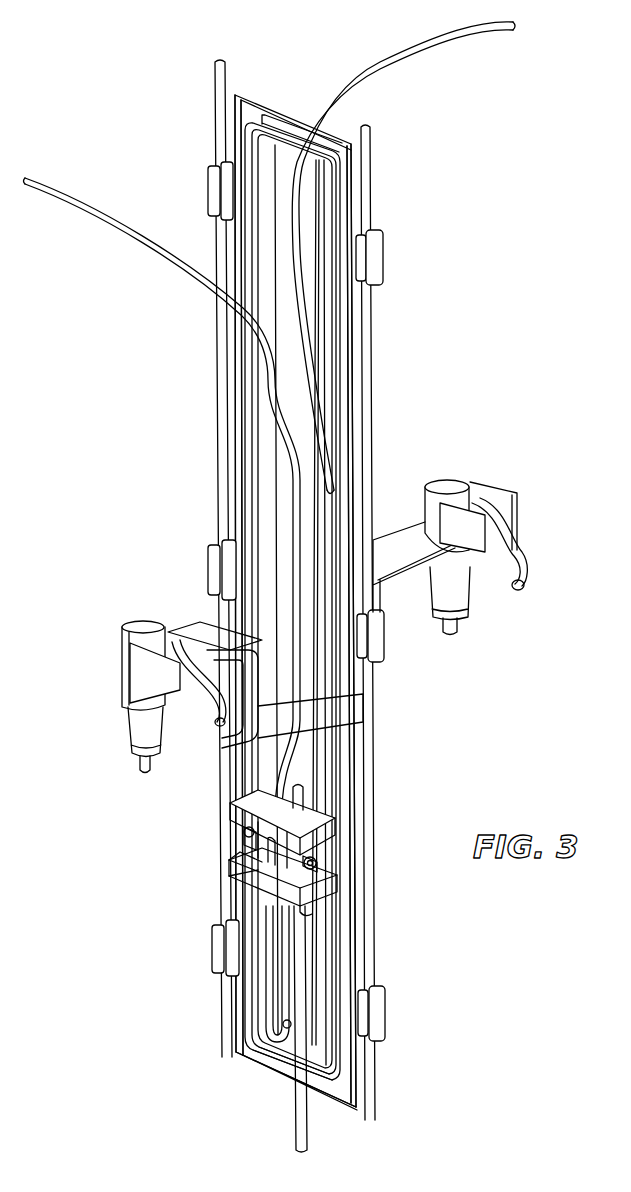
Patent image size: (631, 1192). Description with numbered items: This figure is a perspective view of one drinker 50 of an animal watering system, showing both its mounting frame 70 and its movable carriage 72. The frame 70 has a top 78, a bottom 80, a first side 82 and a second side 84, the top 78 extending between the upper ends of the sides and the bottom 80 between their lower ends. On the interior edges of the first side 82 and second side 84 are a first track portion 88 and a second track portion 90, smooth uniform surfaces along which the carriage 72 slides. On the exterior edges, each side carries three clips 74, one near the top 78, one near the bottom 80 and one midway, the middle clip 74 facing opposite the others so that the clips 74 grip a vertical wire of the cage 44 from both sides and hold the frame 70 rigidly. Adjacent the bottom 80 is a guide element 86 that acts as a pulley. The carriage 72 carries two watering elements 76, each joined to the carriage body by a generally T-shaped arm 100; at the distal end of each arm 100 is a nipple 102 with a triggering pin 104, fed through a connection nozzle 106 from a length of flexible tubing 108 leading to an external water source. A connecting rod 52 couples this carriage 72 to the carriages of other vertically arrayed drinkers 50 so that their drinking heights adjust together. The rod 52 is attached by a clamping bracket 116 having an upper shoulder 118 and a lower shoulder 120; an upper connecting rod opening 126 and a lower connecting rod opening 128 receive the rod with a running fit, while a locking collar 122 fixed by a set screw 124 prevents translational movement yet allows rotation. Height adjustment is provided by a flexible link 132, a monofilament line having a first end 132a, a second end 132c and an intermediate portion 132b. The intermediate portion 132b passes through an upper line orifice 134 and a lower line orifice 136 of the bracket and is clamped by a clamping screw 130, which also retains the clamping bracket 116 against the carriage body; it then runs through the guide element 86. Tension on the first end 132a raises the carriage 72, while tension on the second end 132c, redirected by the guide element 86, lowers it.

The drinker 50 is at (307, 587).
The frame 70 is at (292, 582).
The top 78 is at (297, 120).
The first side 82 is at (225, 390).
The second side 84 is at (345, 370).
The first track portion 88 is at (250, 472).
The second track portion 90 is at (330, 415).
The guide element 86 is at (245, 1057).
The bottom 80 is at (255, 1085).
The cage 44 is at (372, 143).
The connecting rod 52 is at (307, 1145).
The clip 74 is at (208, 168).
The carriage 72 is at (299, 849).
The watering element 76 is at (313, 624).
The arm 100 is at (205, 625).
The nipple 102 is at (135, 735).
The triggering pin 104 is at (143, 770).
The connection nozzle 106 is at (150, 622).
The flexible tubing 108 is at (203, 718).
The clamping bracket 116 is at (322, 848).
The upper shoulder 118 is at (315, 837).
The lower shoulder 120 is at (322, 882).
The locking collar 122 is at (318, 852).
The set screw 124 is at (330, 867).
The upper connecting rod opening 126 is at (333, 822).
The lower connecting rod opening 128 is at (310, 897).
The clamping screw 130 is at (262, 860).
The upper line orifice 134 is at (244, 831).
The lower line orifice 136 is at (258, 880).
The flexible link 132 is at (330, 455).
The first end 132a is at (37, 180).
The intermediate portion 132b is at (283, 1030).
The second end 132c is at (515, 30).